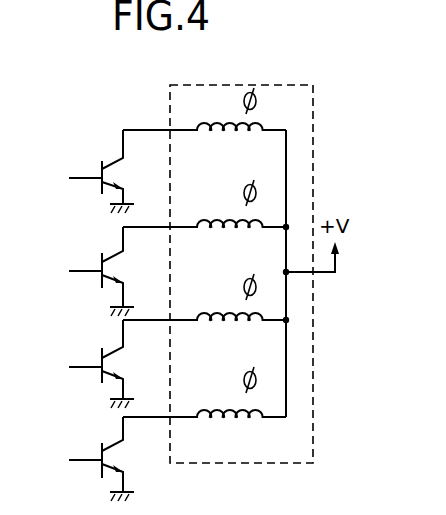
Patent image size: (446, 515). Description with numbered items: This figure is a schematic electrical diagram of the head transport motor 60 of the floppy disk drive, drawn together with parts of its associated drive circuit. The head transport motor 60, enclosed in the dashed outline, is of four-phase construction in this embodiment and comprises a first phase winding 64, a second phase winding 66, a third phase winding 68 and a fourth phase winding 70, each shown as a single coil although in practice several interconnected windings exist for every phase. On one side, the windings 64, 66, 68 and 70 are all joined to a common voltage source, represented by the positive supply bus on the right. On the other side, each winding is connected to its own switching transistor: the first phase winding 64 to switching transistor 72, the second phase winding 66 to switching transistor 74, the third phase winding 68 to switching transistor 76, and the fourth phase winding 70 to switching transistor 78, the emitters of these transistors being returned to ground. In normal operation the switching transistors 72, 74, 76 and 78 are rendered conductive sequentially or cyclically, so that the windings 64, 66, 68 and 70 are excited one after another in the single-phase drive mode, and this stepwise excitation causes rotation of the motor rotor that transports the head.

The head transport motor 60 is at (315, 132).
The first phase winding 64 is at (218, 134).
The second phase winding 66 is at (218, 235).
The third phase winding 68 is at (220, 327).
The fourth phase winding 70 is at (220, 422).
The switching transistor 72 is at (100, 165).
The switching transistor 74 is at (95, 258).
The switching transistor 76 is at (97, 355).
The switching transistor 78 is at (98, 447).